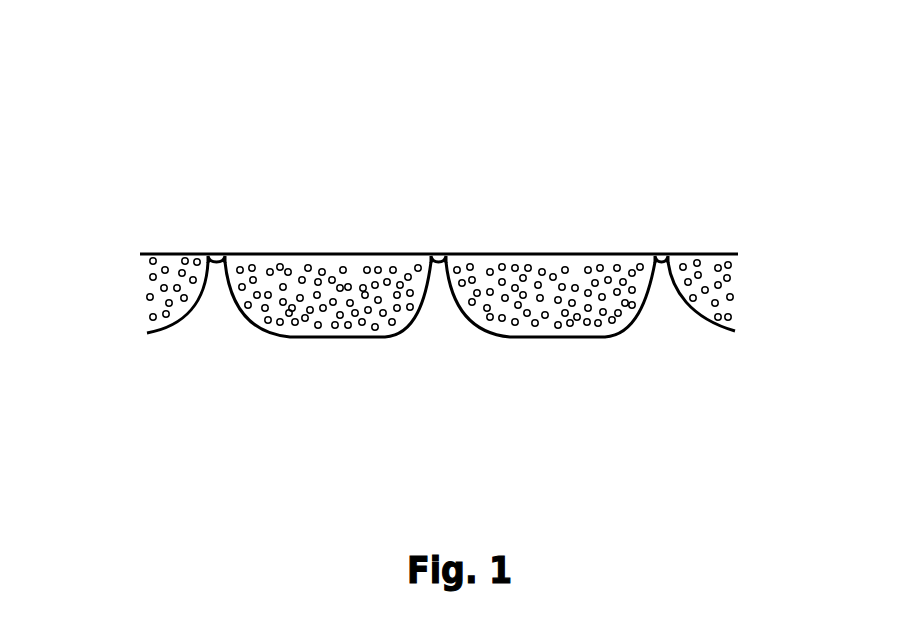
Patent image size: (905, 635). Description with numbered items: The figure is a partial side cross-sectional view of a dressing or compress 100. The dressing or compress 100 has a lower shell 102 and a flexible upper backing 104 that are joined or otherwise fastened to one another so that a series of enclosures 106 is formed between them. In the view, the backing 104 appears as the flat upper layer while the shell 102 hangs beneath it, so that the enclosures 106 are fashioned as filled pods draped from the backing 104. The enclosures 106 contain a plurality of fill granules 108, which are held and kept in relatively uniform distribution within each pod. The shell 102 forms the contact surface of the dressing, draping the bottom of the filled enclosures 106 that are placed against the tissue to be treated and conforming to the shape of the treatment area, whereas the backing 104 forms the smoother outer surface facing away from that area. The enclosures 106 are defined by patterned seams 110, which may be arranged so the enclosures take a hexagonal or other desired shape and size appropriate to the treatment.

The dressing or compress 100 is at (585, 84).
The lower shell 102 is at (133, 335).
The flexible upper backing 104 is at (131, 256).
The enclosures 106 is at (373, 343).
The fill granules 108 is at (742, 298).
The patterned seams 110 is at (217, 240).